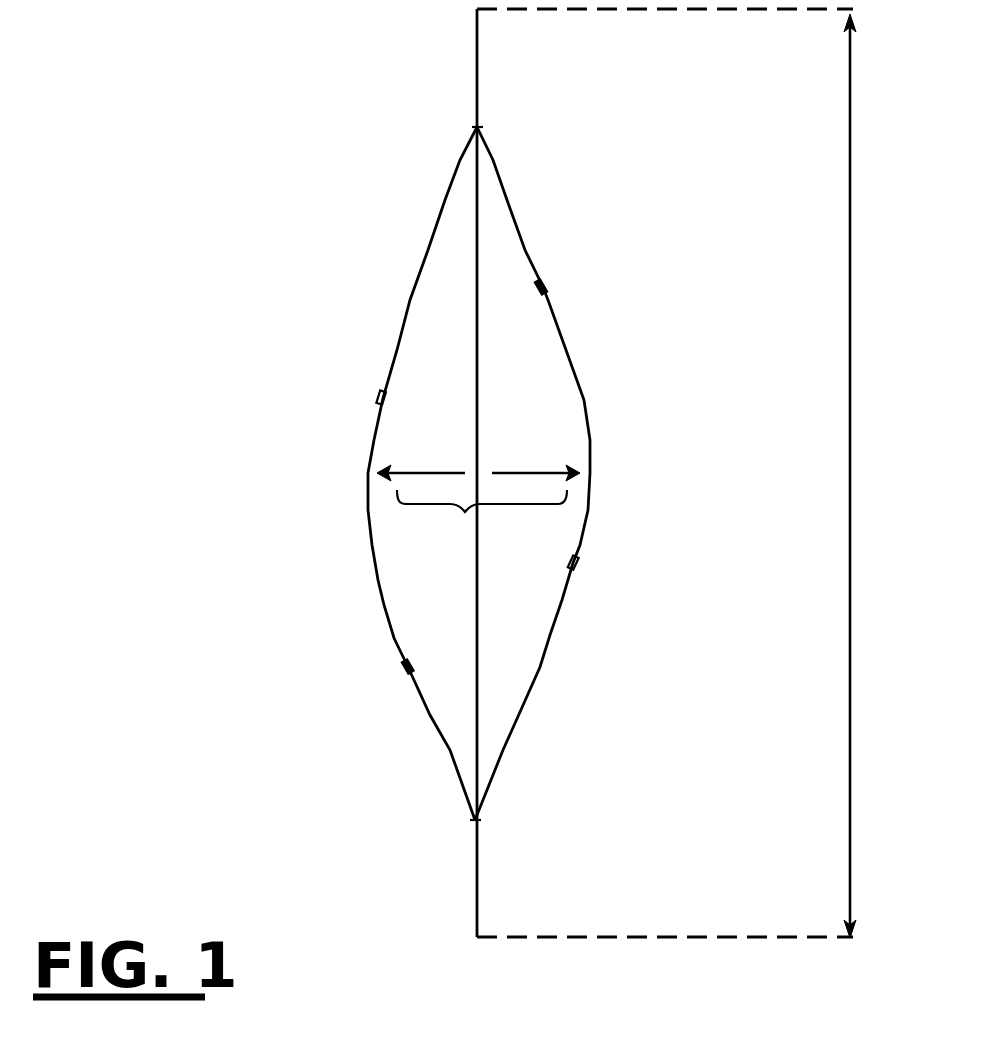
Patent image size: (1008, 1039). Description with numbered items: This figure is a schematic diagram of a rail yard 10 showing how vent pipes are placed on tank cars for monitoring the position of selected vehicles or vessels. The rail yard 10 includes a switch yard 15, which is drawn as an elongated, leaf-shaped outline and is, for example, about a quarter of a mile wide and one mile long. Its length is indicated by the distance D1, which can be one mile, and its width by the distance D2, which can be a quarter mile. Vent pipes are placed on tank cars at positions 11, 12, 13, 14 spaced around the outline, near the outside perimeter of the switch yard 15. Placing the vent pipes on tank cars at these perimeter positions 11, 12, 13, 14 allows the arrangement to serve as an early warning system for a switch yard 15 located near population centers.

The rail yard 10 is at (626, 114).
The position 11 is at (392, 400).
The position 12 is at (412, 665).
The position 13 is at (543, 285).
The position 14 is at (576, 570).
The switch yard 15 is at (665, 756).
The distance D1 is at (850, 473).
The distance D2 is at (457, 518).